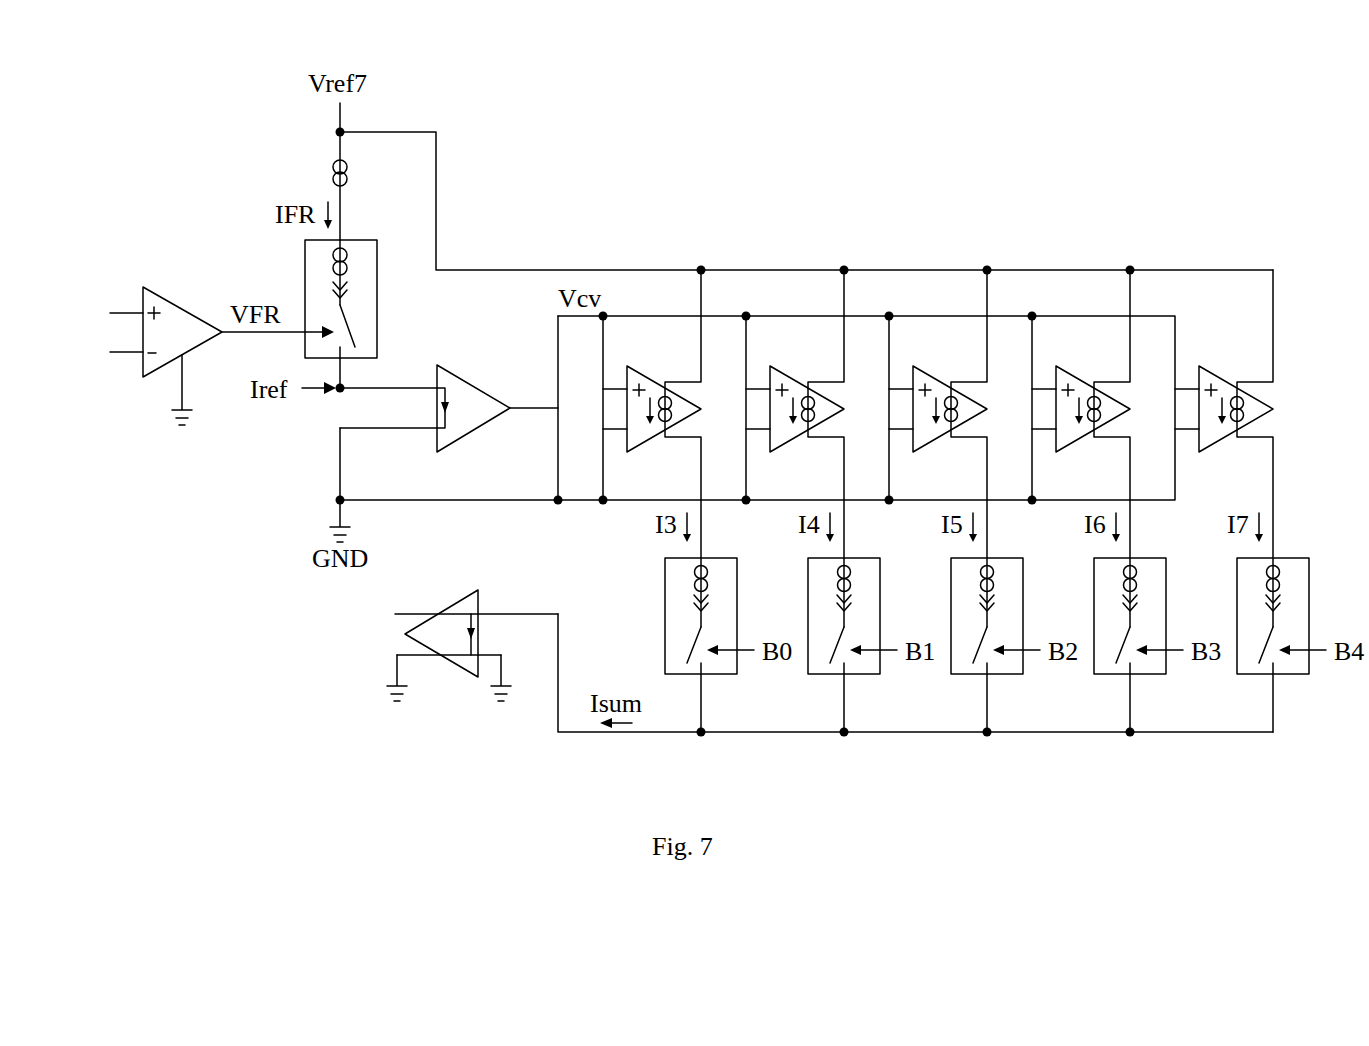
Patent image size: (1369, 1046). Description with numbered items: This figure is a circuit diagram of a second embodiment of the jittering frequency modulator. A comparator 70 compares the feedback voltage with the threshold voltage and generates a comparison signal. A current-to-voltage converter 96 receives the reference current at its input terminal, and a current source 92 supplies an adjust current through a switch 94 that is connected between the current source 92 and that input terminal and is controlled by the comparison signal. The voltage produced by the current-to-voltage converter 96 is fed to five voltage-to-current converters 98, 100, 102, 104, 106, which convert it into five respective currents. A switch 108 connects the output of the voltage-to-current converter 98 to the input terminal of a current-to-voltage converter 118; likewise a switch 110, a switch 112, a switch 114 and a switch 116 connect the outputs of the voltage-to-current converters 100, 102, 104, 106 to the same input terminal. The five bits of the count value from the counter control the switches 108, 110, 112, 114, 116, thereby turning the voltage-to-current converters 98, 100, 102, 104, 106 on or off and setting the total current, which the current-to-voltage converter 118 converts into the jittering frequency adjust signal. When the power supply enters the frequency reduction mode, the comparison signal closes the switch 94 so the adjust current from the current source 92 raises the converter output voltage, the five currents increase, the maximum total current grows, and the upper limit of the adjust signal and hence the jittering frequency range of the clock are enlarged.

The comparator 70 is at (177, 300).
The current source 92 is at (348, 172).
The switch 94 is at (377, 323).
The current-to-voltage converter 96 is at (463, 375).
The voltage-to-current converter 98 is at (648, 438).
The voltage-to-current converter 100 is at (791, 438).
The voltage-to-current converter 102 is at (934, 438).
The voltage-to-current converter 104 is at (1077, 438).
The voltage-to-current converter 106 is at (1220, 438).
The switch 108 is at (737, 607).
The switch 110 is at (880, 607).
The switch 112 is at (1023, 607).
The switch 114 is at (1166, 607).
The switch 116 is at (1309, 607).
The current-to-voltage converter 118 is at (455, 602).